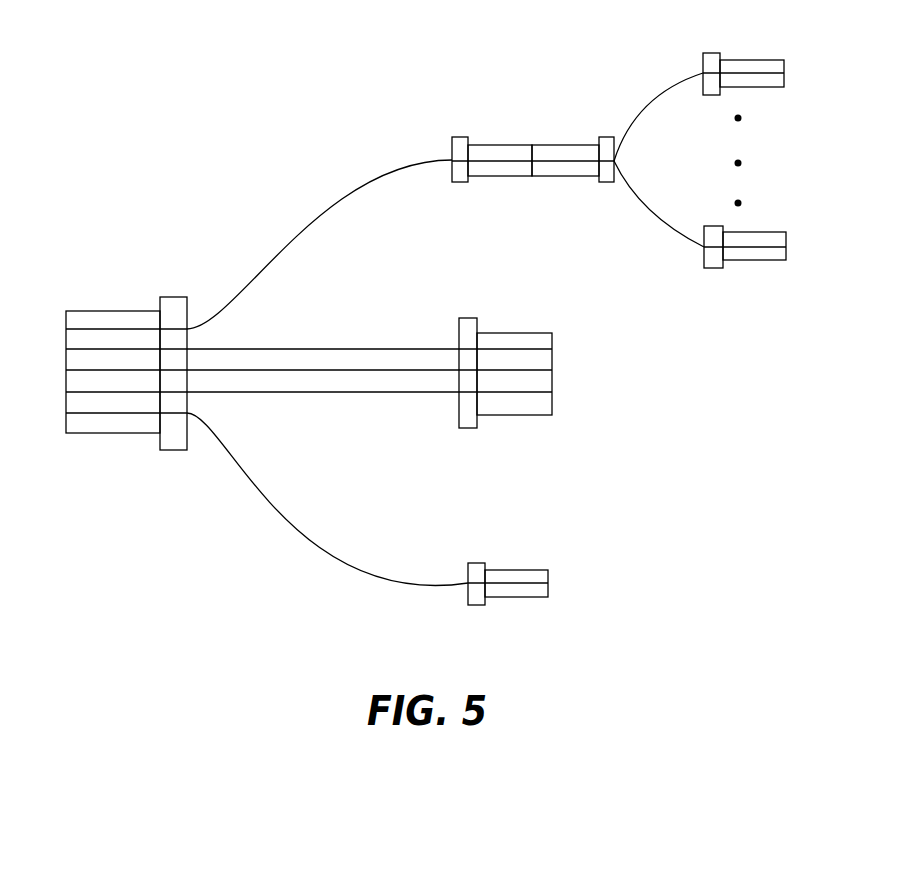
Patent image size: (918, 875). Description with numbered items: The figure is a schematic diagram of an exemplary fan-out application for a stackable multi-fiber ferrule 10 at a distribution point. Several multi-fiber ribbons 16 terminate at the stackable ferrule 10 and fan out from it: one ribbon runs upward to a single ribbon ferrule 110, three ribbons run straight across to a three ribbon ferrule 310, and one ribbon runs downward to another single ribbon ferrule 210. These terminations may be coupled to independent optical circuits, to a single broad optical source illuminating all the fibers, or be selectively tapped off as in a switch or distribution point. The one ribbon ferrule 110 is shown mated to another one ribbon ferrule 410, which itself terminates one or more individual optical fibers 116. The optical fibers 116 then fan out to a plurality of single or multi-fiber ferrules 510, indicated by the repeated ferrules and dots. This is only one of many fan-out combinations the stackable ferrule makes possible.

The stackable multi-fiber ferrule 10 is at (120, 290).
The multi-fiber ribbons 16 is at (278, 252).
The single ribbon ferrule 110 is at (500, 141).
The one ribbon ferrule 410 is at (582, 134).
The individual optical fibers 116 is at (642, 110).
The single or multi-fiber ferrules 510 is at (754, 46).
The three ribbon ferrule 310 is at (520, 320).
The single ribbon ferrule 210 is at (517, 561).